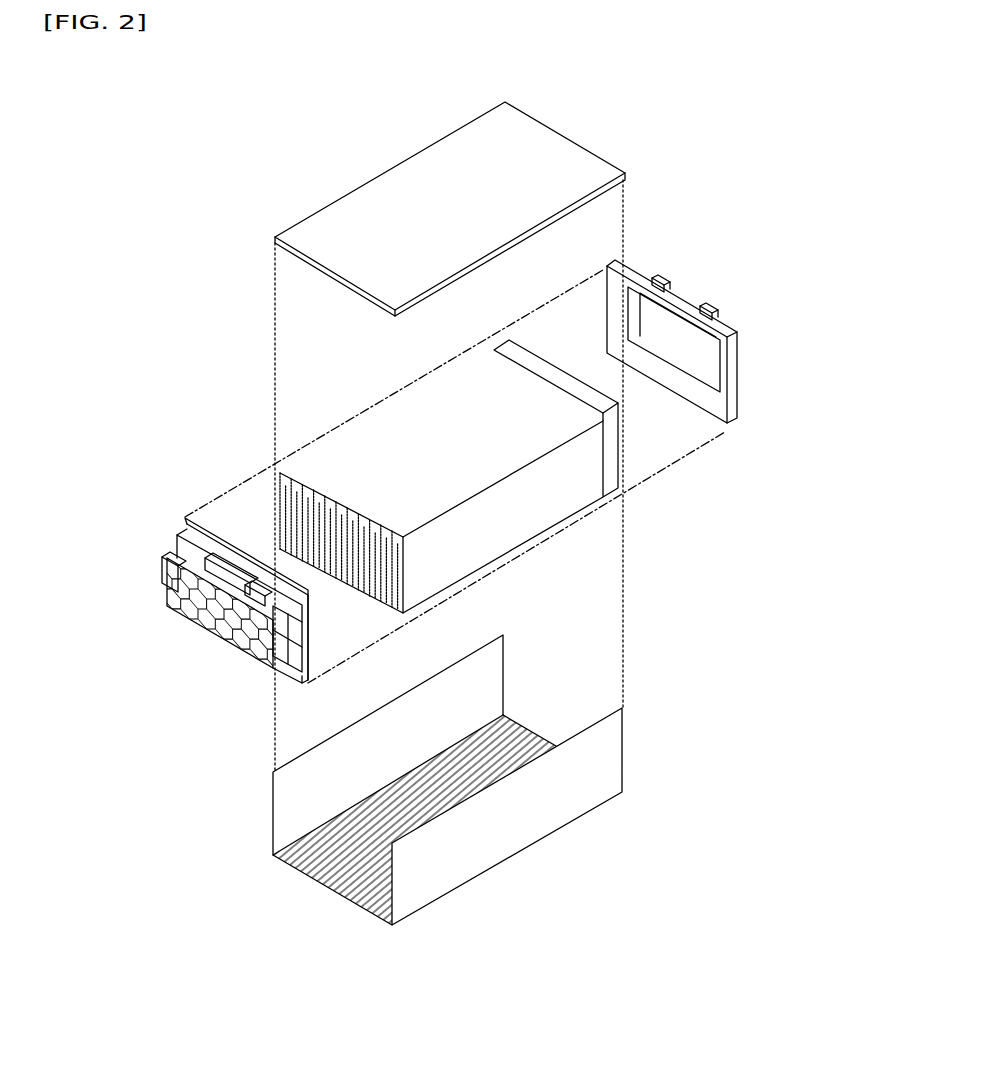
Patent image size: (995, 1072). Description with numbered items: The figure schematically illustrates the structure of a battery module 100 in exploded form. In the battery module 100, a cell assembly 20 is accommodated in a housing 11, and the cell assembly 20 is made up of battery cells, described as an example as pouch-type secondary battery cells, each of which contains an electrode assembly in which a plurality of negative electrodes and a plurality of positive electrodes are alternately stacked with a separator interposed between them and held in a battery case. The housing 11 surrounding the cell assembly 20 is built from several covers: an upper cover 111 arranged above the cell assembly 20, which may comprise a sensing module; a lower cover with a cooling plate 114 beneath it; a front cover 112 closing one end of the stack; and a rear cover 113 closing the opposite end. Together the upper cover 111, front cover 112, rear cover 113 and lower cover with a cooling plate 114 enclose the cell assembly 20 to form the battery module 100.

The battery module 100 is at (198, 96).
The housing 11 is at (472, 496).
The upper cover 111 is at (430, 133).
The front cover 112 is at (215, 648).
The rear cover 113 is at (690, 289).
The lower cover with a cooling plate 114 is at (556, 842).
The cell assembly 20 is at (583, 520).